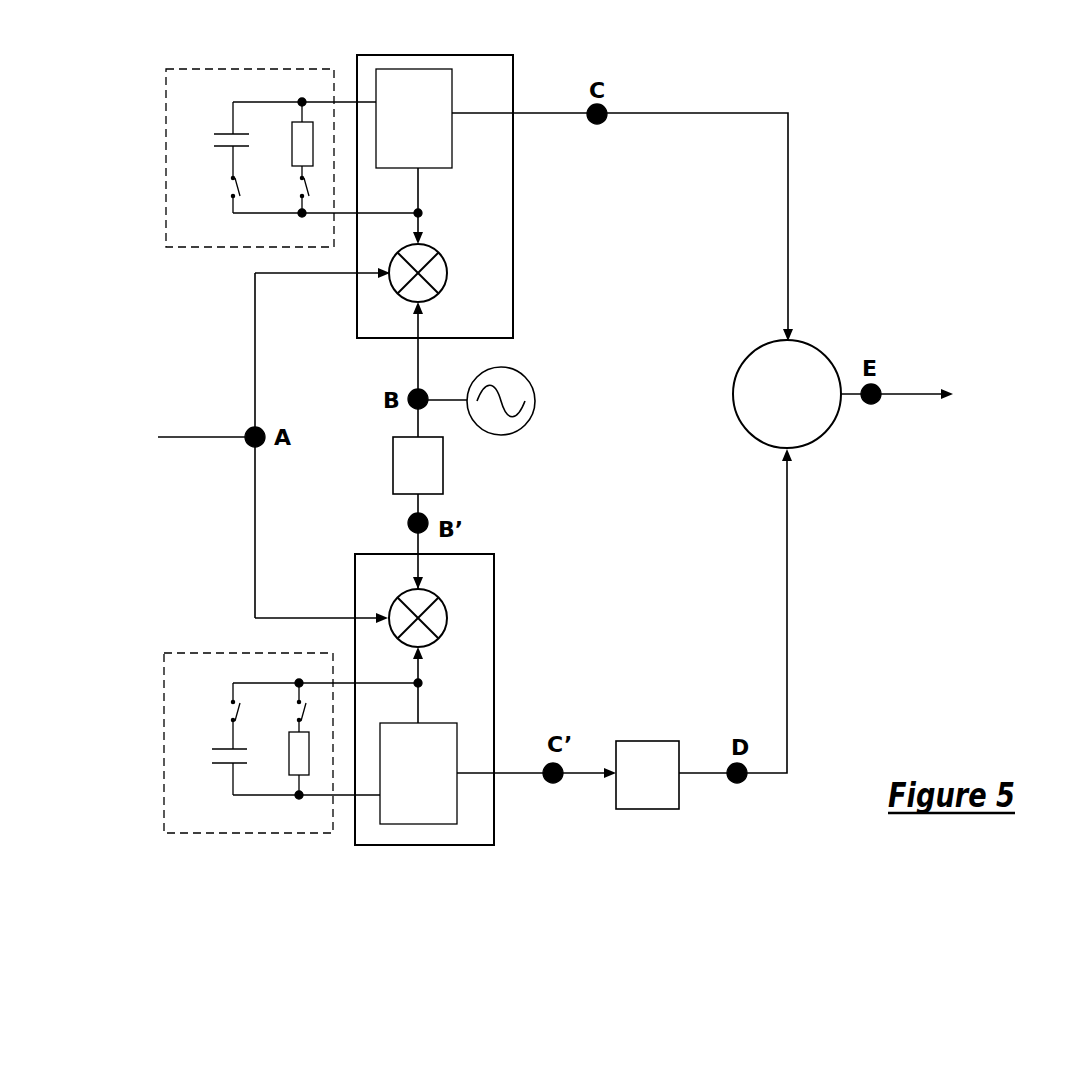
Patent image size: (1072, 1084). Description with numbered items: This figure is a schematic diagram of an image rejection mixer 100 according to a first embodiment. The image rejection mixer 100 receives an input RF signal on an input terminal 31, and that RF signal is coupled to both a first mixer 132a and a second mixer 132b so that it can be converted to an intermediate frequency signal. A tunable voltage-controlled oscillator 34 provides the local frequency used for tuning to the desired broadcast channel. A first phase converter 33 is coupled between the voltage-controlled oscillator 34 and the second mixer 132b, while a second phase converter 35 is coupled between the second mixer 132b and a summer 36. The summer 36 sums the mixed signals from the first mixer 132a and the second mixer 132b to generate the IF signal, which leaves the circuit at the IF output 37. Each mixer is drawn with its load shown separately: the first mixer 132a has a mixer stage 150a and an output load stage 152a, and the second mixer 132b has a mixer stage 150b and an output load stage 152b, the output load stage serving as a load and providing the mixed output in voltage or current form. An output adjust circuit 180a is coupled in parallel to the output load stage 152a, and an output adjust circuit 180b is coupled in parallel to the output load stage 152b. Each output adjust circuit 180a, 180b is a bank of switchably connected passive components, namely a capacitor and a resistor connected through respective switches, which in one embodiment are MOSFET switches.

The image rejection mixer 100 is at (830, 100).
The input terminal 31 is at (212, 438).
The first phase converter 33 is at (392, 458).
The tunable voltage-controlled oscillator 34 is at (535, 386).
The second phase converter 35 is at (647, 740).
The summer 36 is at (825, 348).
The IF signal output 37 is at (930, 396).
The first mixer 132a is at (513, 231).
The second mixer 132b is at (494, 629).
The mixer stage 150a is at (447, 282).
The mixer stage 150b is at (442, 634).
The output load stage 152a is at (443, 170).
The output load stage 152b is at (432, 722).
The output adjust circuit 180a is at (166, 124).
The output adjust circuit 180b is at (166, 709).